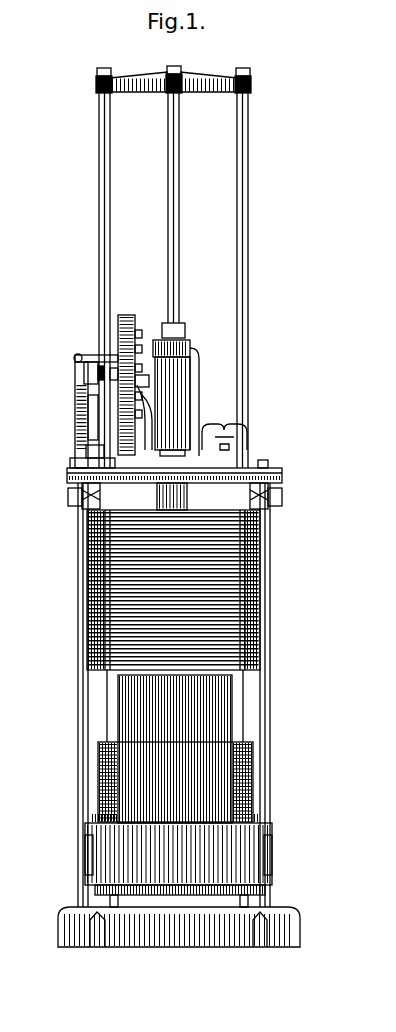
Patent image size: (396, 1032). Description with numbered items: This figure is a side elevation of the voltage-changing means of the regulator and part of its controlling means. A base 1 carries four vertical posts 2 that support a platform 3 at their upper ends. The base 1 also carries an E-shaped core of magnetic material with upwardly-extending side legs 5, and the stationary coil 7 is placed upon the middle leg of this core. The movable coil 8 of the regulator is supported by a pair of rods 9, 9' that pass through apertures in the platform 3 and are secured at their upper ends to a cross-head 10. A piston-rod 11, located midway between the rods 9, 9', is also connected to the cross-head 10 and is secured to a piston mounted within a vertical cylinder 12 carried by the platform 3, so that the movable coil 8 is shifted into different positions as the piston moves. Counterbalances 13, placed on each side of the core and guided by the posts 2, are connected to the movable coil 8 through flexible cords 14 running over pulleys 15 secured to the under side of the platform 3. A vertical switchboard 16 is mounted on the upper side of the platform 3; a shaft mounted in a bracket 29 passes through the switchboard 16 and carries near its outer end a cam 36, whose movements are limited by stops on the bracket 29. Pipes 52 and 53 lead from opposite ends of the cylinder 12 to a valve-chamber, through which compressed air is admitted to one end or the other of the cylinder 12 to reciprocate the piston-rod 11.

The base 1 is at (283, 928).
The vertical posts 2 is at (78, 627).
The platform 3 is at (272, 476).
The side legs 5 is at (205, 707).
The stationary coil 7 is at (255, 772).
The movable coil 8 is at (243, 580).
The rod 9 is at (113, 280).
The rod 9' is at (253, 280).
The cross-head 10 is at (206, 78).
The piston-rod 11 is at (176, 272).
The vertical cylinder 12 is at (180, 400).
The counterbalances 13 is at (248, 848).
The flexible cords 14 is at (107, 716).
The pulleys 15 is at (80, 508).
The switchboard 16 is at (132, 323).
The bracket 29 is at (75, 428).
The cam 36 is at (75, 371).
The pipe 52 is at (199, 358).
The pipe 53 is at (196, 500).